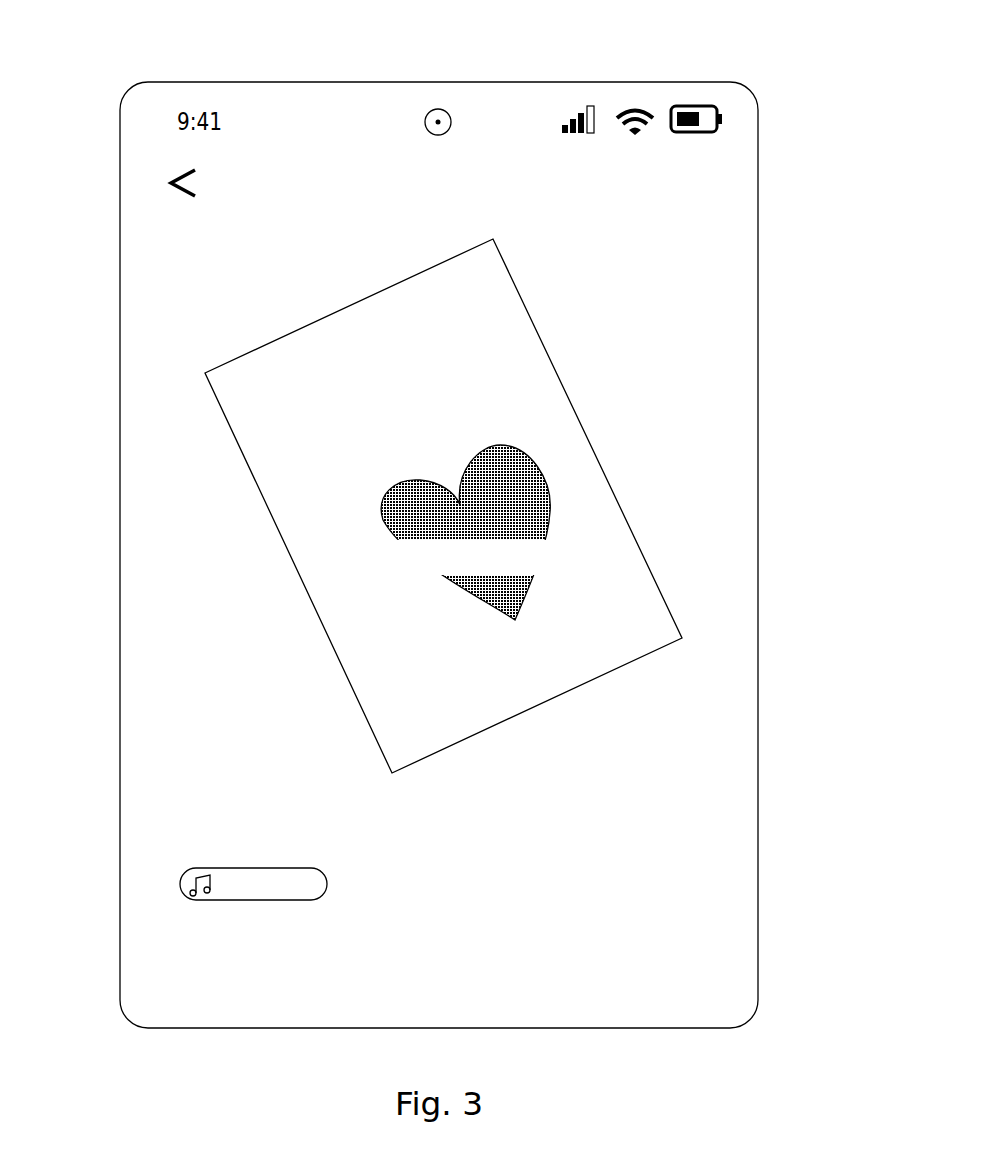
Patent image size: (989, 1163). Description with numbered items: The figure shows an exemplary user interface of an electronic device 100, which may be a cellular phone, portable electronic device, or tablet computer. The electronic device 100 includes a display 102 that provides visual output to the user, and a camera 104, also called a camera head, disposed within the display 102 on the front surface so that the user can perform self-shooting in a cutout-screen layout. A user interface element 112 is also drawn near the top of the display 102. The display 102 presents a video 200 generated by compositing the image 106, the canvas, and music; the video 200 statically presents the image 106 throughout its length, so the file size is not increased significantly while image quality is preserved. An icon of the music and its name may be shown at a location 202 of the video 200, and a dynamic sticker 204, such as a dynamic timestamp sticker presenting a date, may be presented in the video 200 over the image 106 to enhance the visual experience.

The electronic device 100 is at (124, 34).
The display 102 is at (758, 610).
The camera 104 is at (443, 109).
The image 106 is at (503, 285).
The back button 112 is at (198, 188).
The video 200 is at (703, 398).
The location 202 is at (323, 879).
The dynamic sticker 204 is at (520, 541).